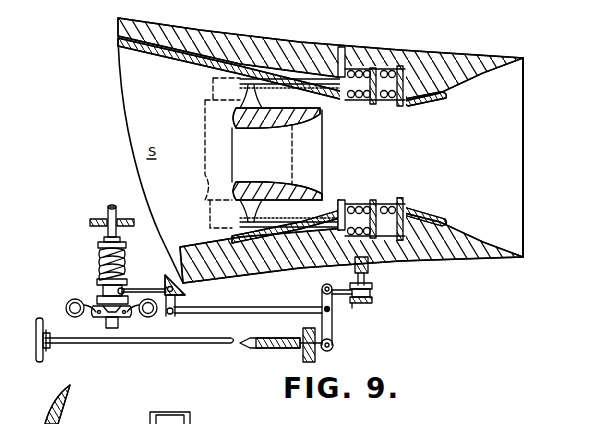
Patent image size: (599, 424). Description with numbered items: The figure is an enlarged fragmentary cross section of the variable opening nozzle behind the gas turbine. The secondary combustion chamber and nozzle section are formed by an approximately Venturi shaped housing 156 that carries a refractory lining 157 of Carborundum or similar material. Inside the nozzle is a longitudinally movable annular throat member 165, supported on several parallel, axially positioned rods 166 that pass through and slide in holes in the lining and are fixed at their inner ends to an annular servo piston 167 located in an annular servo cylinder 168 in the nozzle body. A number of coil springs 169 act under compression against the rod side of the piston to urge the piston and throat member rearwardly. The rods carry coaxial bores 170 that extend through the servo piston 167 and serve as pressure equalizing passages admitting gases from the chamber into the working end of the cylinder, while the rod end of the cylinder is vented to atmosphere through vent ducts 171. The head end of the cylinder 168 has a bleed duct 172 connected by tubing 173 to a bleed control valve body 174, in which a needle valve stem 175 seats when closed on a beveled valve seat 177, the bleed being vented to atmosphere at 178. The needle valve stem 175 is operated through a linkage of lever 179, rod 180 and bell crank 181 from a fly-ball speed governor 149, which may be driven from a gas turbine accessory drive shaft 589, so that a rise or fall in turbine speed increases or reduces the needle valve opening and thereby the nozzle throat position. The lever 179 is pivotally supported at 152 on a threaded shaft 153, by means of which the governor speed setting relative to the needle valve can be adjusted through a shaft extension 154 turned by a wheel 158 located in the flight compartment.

The Venturi shaped housing 156 is at (195, 32).
The refractory lining 157 is at (200, 60).
The parallel axially positioned rods 166 is at (282, 48).
The atmospheric vent ducts 171 is at (320, 50).
The annular shaped servo cylinder 168 is at (346, 66).
The coil springs 169 is at (345, 100).
The annular shaped servo piston 167 is at (369, 108).
The annular throat member 165 is at (272, 160).
The coaxial bores 170 is at (263, 250).
The bleed duct 172 is at (322, 268).
The tubing 173 is at (366, 270).
The atmospheric vent 178 is at (373, 288).
The beveled valve seat 177 is at (372, 294).
The bleed control valve body 174 is at (373, 301).
The needle valve stem 175 is at (354, 302).
The lever 179 is at (335, 331).
The rod 180 is at (221, 318).
The bell crank 181 is at (148, 291).
The gas turbine accessory drive shaft 589 is at (108, 214).
The fly-ball speed governor 149 is at (103, 291).
The shaft extension 154 is at (166, 342).
The wheel 158 is at (36, 336).
The threaded shaft 153 is at (300, 347).
The pivot 152 is at (331, 349).